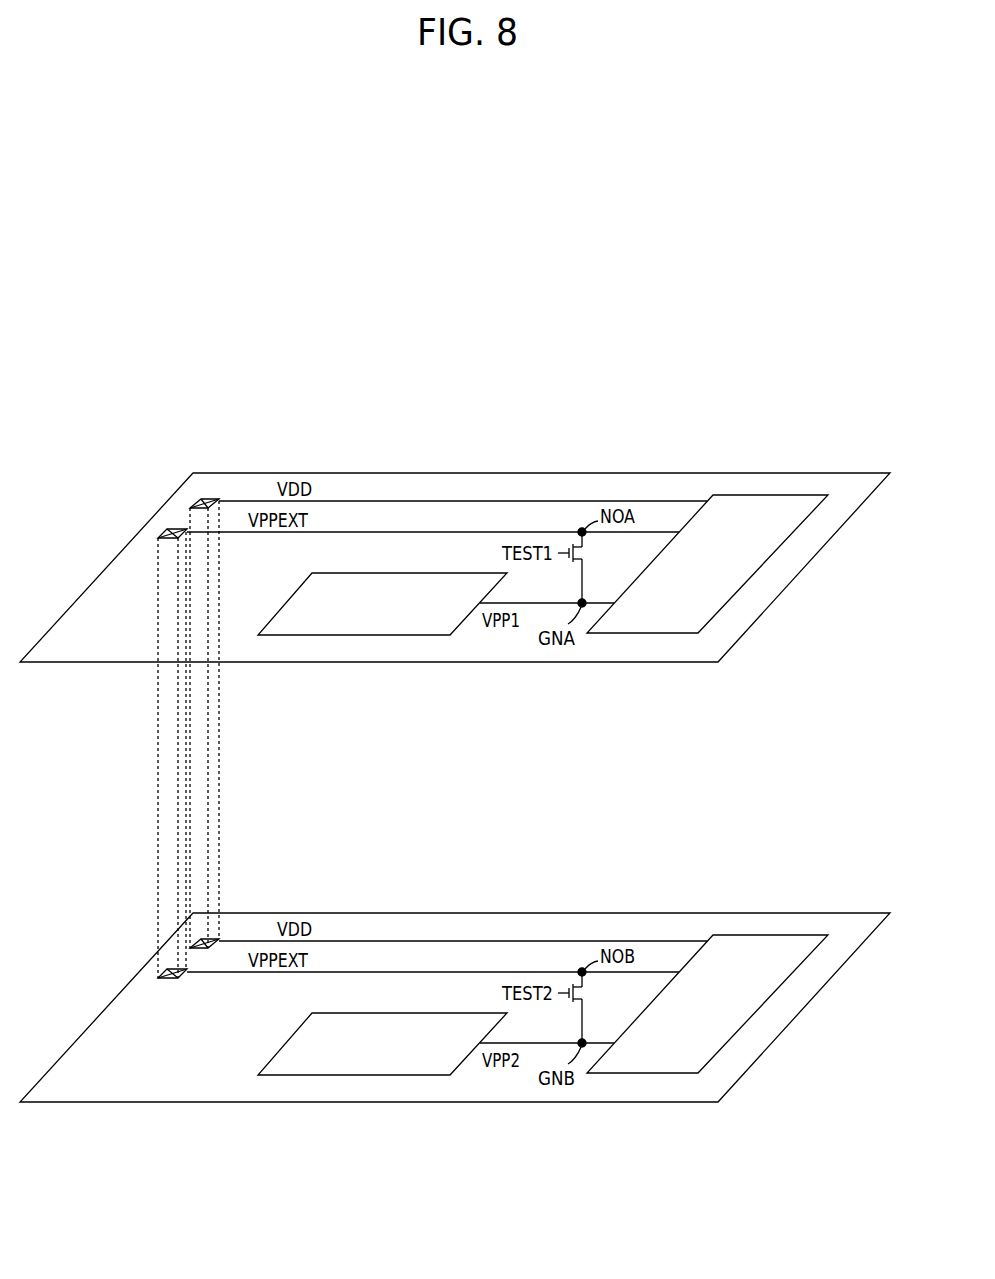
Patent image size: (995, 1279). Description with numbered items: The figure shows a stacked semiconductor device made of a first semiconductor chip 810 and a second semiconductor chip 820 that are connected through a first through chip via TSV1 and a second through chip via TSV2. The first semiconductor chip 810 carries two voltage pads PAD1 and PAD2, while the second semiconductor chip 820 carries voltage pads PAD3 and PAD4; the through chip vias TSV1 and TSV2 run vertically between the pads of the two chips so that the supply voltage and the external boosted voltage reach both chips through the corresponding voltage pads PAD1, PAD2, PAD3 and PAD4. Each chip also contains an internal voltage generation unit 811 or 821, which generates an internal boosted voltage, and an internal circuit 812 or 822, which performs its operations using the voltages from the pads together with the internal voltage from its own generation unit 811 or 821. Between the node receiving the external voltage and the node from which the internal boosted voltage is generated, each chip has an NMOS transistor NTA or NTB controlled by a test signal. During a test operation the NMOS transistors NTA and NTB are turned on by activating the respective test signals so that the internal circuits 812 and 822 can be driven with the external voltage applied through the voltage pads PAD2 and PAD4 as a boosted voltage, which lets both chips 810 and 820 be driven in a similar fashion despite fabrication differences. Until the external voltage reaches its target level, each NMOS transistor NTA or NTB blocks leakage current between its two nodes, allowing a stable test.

The first semiconductor chip 810 is at (836, 533).
The internal voltage generation unit 811 is at (772, 493).
The internal circuit 812 is at (302, 585).
The second semiconductor chip 820 is at (836, 973).
The internal voltage generation unit 821 is at (772, 933).
The internal circuit 822 is at (302, 1025).
The voltage pad PAD1 is at (208, 497).
The voltage pad PAD2 is at (158, 531).
The voltage pad PAD3 is at (208, 937).
The voltage pad PAD4 is at (158, 971).
The first through chip via TSV1 is at (220, 748).
The second through chip via TSV2 is at (158, 825).
The NMOS transistor NTA is at (585, 554).
The NMOS transistor NTB is at (585, 994).